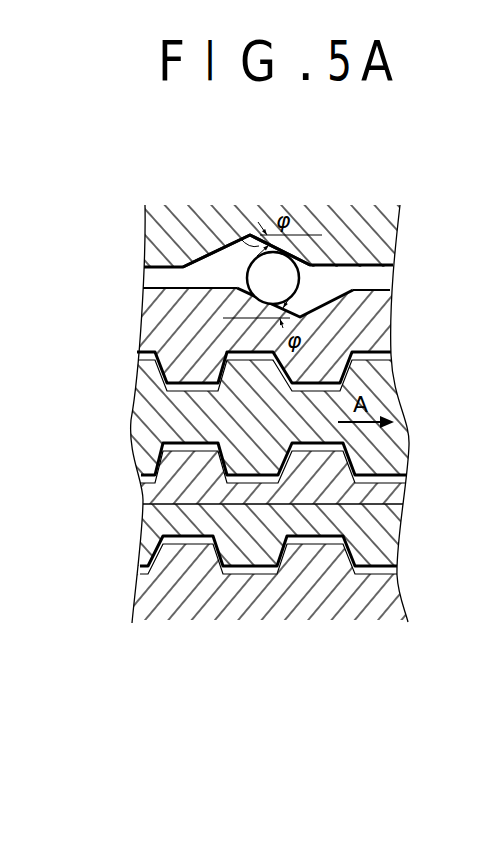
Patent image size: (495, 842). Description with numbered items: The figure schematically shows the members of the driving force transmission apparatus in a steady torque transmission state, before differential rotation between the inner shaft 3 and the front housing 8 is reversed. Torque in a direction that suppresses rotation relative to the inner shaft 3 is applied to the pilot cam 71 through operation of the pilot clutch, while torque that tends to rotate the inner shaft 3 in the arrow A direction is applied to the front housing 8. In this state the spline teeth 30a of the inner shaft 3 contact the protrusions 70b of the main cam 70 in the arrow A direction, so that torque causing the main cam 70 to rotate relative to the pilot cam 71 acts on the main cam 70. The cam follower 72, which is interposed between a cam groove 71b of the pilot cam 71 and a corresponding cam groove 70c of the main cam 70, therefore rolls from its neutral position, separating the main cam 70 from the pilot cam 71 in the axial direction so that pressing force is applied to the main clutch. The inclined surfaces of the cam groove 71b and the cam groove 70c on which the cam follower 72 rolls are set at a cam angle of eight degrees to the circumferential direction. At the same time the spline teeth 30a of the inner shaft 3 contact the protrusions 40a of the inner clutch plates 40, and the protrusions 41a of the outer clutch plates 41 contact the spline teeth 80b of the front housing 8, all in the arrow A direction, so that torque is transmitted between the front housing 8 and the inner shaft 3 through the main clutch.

The pilot cam 71 is at (270, 202).
The cam groove 71b is at (230, 230).
The cam follower 72 is at (257, 277).
The main cam 70 is at (283, 329).
The cam groove 70c is at (343, 303).
The protrusion 70b is at (335, 347).
The inner shaft 3 is at (260, 417).
The spline teeth 30a is at (261, 379).
The inner clutch plate 40 is at (280, 475).
The protrusion 40a is at (332, 463).
The outer clutch plate 41 is at (253, 593).
The protrusion 41a is at (291, 545).
The front housing 8 is at (259, 614).
The spline teeth 80b is at (193, 563).